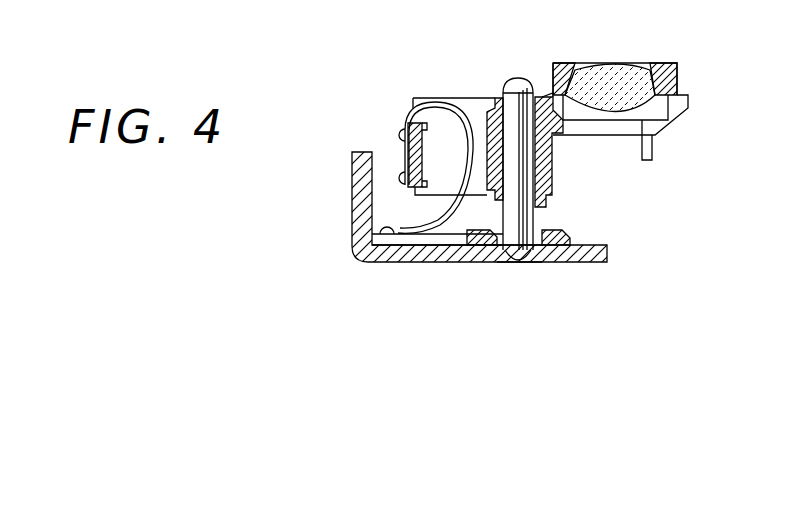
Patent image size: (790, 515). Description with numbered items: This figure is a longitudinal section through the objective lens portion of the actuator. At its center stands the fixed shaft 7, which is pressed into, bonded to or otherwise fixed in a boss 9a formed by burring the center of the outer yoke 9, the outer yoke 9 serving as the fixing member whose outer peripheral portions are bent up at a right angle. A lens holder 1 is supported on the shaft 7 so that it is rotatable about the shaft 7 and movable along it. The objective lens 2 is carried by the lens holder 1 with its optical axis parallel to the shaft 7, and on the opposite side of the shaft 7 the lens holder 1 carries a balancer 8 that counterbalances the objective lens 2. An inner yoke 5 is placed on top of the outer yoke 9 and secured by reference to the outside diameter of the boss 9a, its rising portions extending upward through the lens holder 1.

The lens holder 1 is at (552, 125).
The objective lens 2 is at (632, 63).
The inner yoke 5 is at (560, 231).
The fixed shaft 7 is at (512, 78).
The balancer 8 is at (408, 160).
The outer yoke 9 is at (362, 193).
The boss 9a is at (541, 263).